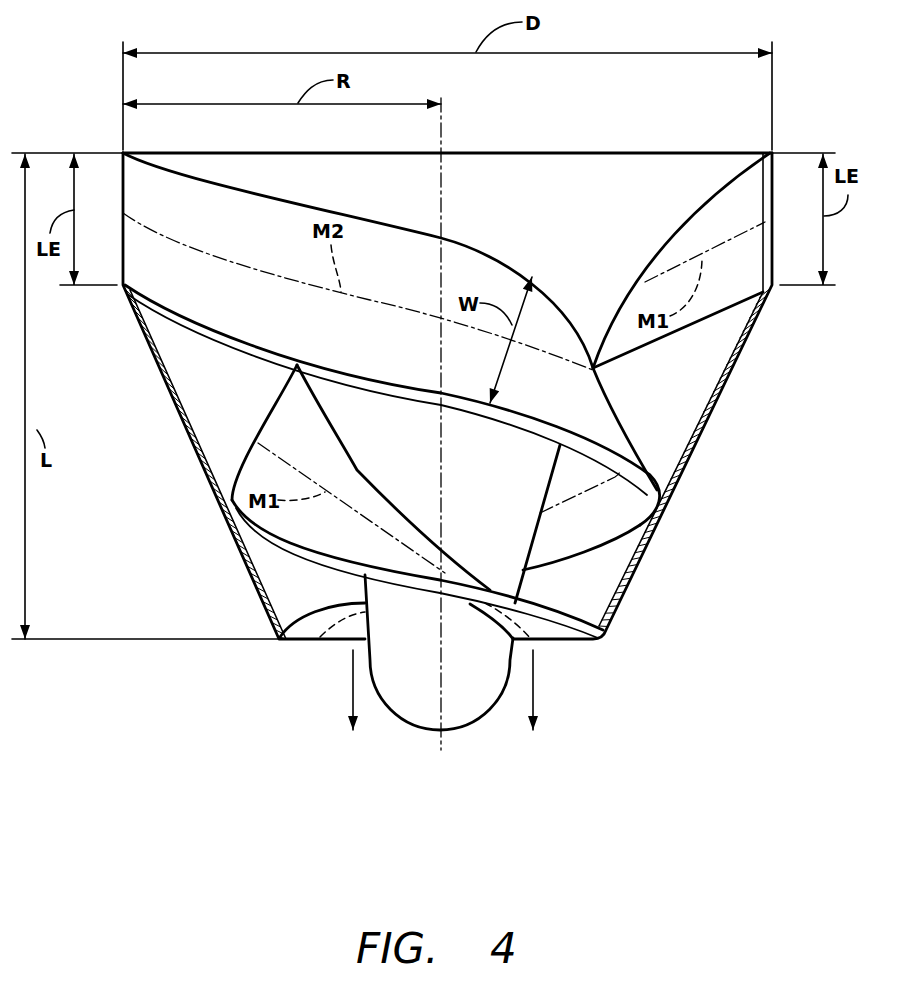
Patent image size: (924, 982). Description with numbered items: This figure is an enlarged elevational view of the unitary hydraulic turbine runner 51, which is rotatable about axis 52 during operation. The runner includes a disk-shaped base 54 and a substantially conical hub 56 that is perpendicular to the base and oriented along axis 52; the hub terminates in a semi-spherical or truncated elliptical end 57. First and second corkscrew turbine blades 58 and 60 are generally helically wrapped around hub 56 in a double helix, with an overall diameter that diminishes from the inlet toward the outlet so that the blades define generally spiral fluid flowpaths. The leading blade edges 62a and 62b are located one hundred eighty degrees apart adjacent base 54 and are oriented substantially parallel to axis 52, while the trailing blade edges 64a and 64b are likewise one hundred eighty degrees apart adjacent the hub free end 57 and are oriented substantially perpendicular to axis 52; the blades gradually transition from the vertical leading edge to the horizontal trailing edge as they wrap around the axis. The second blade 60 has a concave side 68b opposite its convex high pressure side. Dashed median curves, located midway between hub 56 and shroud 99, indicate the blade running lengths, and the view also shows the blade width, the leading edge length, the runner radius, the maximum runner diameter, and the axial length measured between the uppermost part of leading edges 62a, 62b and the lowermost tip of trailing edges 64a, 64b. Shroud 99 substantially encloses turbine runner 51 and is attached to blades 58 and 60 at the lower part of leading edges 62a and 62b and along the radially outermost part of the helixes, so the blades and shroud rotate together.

The turbine runner 51 is at (236, 662).
The axis 52 is at (443, 137).
The base 54 is at (597, 152).
The hub 56 is at (444, 393).
The end 57 is at (480, 715).
The first corkscrew turbine blade 58 is at (705, 323).
The second corkscrew turbine blade 60 is at (195, 335).
The leading blade edge 62a is at (773, 180).
The leading blade edge 62b is at (123, 183).
The trailing blade edge 64a is at (573, 640).
The trailing blade edge 64b is at (307, 641).
The concave side 68b is at (600, 548).
The shroud 99 is at (208, 470).